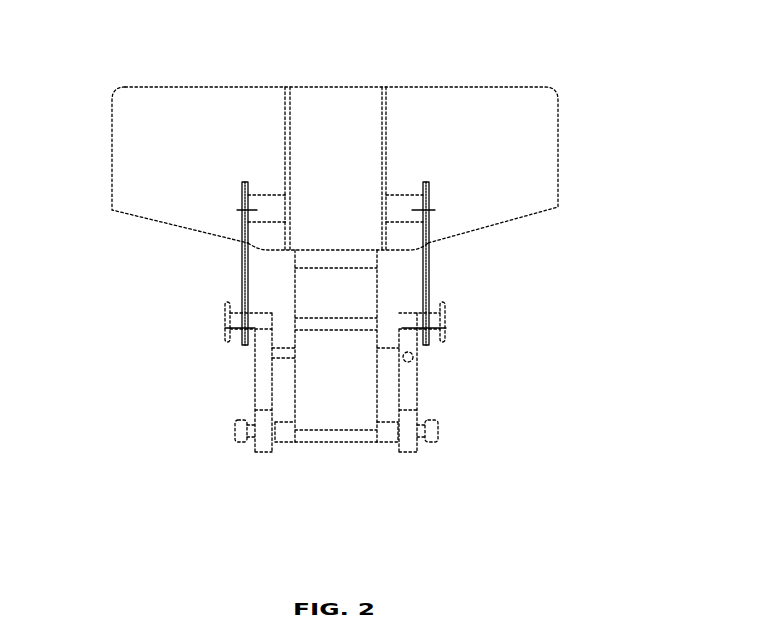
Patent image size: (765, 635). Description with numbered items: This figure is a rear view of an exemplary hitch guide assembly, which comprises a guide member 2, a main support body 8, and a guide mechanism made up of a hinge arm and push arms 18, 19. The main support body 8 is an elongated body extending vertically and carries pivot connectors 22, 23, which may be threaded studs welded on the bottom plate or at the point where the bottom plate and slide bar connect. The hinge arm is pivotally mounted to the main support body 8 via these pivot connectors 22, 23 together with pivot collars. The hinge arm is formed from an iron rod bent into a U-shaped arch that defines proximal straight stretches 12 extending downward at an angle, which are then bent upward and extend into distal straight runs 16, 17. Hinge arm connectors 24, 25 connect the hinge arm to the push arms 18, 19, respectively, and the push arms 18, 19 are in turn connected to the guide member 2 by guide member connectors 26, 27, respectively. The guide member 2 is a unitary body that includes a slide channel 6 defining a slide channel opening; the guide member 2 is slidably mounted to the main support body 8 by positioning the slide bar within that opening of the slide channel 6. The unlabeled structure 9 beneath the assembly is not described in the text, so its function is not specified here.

The guide member 2 is at (557, 130).
The slide channel 6 is at (340, 100).
The main support body 8 is at (360, 443).
The support column 9 is at (322, 415).
The proximal straight stretch 12 is at (388, 353).
The distal straight run 16 is at (257, 375).
The distal straight run 17 is at (412, 375).
The push arm 18 is at (242, 262).
The push arm 19 is at (429, 262).
The pivot connector 22 is at (233, 430).
The pivot connector 23 is at (440, 430).
The hinge arm connector 24 is at (225, 325).
The hinge arm connector 25 is at (446, 322).
The guide member connector 26 is at (237, 211).
The guide member connector 27 is at (435, 211).